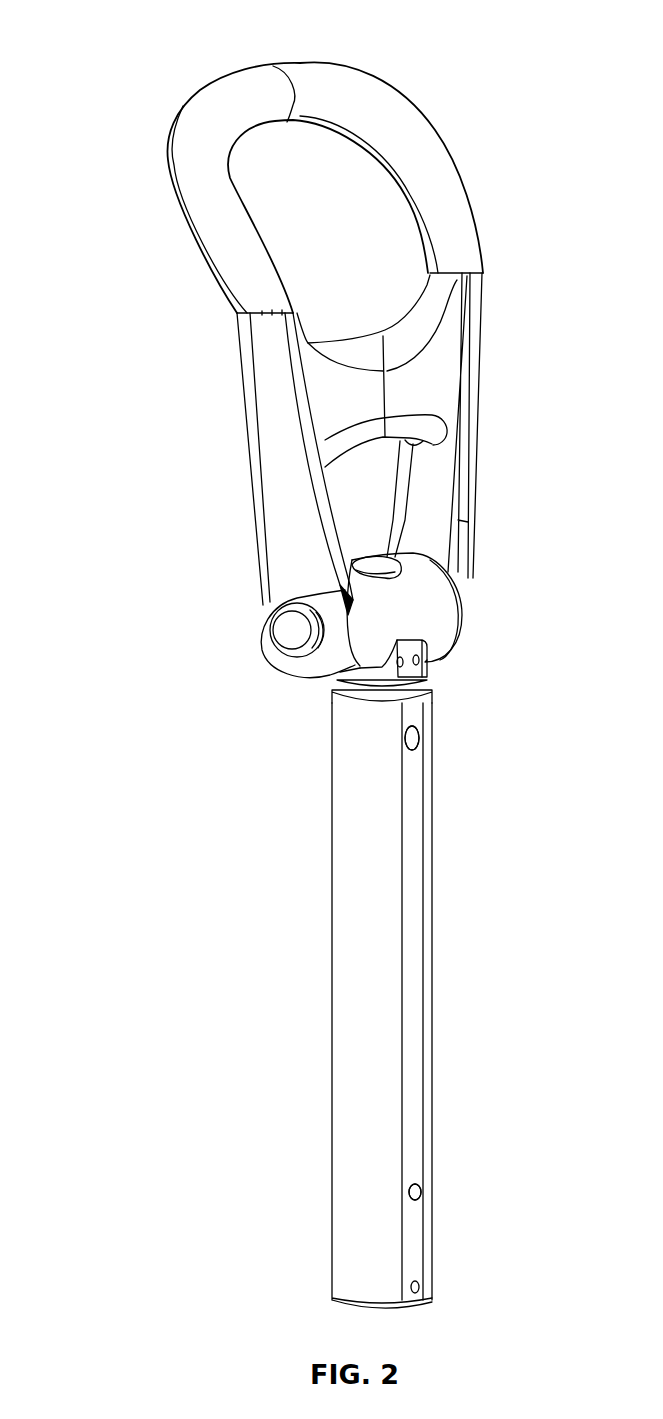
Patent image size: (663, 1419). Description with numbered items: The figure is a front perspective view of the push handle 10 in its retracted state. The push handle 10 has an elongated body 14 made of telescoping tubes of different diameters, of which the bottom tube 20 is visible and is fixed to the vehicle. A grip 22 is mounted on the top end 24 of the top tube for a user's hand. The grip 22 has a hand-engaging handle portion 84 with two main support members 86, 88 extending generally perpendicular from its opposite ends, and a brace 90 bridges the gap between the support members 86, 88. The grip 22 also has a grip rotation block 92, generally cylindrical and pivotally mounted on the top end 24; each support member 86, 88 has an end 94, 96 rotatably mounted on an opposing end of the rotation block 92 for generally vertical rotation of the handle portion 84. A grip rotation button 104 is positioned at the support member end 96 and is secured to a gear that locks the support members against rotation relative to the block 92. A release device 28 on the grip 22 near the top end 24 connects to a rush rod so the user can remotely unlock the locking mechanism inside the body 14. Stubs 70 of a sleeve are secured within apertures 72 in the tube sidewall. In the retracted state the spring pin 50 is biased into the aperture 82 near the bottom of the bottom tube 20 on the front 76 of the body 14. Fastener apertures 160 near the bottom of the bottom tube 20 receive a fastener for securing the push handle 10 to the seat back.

The push handle 10 is at (133, 60).
The hand-engaging handle portion 84 is at (316, 74).
The grip 22 is at (253, 392).
The main support member 88 is at (285, 570).
The main support member 86 is at (470, 447).
The brace 90 is at (443, 363).
The release device 28 is at (383, 560).
The end of support member 94 is at (470, 588).
The end of support member 96 is at (292, 670).
The grip rotation button 104 is at (283, 635).
The grip rotation block 92 is at (437, 635).
The top end 24 is at (430, 670).
The bottom tube 20 is at (337, 900).
The elongated body 14 is at (418, 918).
The front 76 is at (418, 1055).
The aperture 72 is at (417, 737).
The stub 70 is at (417, 742).
The aperture 82 is at (420, 1190).
The spring pin 50 is at (420, 1195).
The fastener aperture 160 is at (420, 1287).